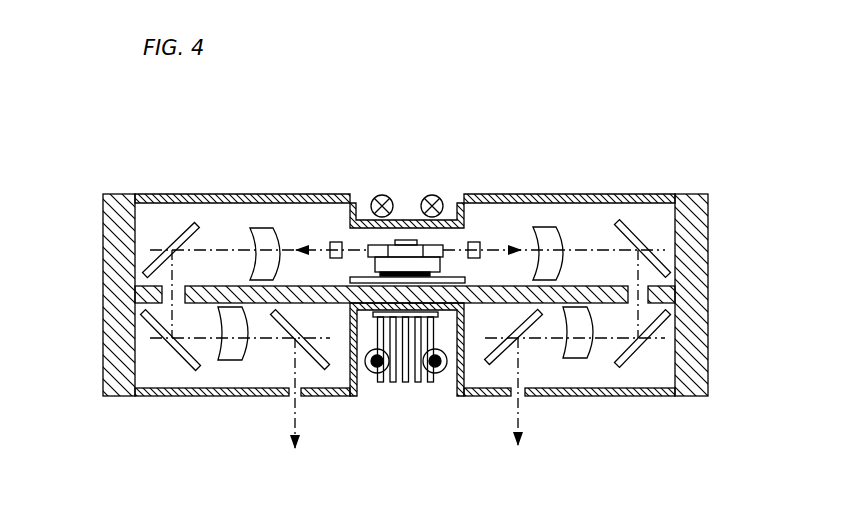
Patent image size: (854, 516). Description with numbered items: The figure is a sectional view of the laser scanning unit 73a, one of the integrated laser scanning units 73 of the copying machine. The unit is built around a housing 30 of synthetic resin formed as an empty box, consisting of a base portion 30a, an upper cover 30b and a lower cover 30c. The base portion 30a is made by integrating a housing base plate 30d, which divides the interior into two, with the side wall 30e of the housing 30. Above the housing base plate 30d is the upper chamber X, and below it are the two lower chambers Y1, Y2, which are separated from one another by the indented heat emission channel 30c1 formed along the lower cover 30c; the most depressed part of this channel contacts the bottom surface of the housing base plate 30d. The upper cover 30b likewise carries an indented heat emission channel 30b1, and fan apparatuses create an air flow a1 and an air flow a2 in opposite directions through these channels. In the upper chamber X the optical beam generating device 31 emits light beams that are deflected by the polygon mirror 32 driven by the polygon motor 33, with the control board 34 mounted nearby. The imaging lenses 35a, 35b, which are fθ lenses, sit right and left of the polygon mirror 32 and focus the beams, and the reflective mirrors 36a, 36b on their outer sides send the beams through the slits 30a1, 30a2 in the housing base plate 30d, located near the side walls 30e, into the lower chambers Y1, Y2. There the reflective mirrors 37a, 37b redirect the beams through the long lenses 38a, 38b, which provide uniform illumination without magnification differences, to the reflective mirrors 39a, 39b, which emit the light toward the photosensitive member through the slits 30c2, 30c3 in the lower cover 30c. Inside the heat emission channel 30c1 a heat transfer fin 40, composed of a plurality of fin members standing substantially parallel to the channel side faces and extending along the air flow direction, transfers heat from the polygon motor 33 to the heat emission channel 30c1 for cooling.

The housing 30 is at (711, 276).
The base portion 30a is at (708, 248).
The slit 30a1 is at (180, 292).
The slit 30a2 is at (633, 292).
The upper cover 30b is at (600, 194).
The heat emission channel 30b1 is at (405, 184).
The lower cover 30c is at (192, 392).
The heat emission channel 30c1 is at (417, 420).
The slit 30c2 is at (292, 393).
The slit 30c3 is at (520, 393).
The housing base plate 30d is at (609, 304).
The side wall 30e is at (112, 320).
The optical beam generating device 31 is at (333, 242).
The polygon mirror 32 is at (440, 246).
The polygon motor 33 is at (376, 262).
The control board 34 is at (464, 280).
The imaging lens 35a is at (265, 228).
The imaging lens 35b is at (550, 227).
The reflective mirror 36a is at (160, 247).
The reflective mirror 36b is at (636, 240).
The reflective mirror 37a is at (175, 357).
The reflective mirror 37b is at (650, 342).
The long lens 38a is at (236, 358).
The long lens 38b is at (582, 360).
The reflective mirror 39a is at (325, 365).
The reflective mirror 39b is at (490, 365).
The heat transfer fin 40 is at (405, 385).
The laser scanning unit 73 is at (163, 207).
The laser scanning unit 73a is at (660, 134).
The air flow a1 is at (372, 375).
The air flow a2 is at (378, 197).
The upper chamber X is at (487, 227).
The lower chamber Y1 is at (283, 376).
The lower chamber Y2 is at (560, 376).